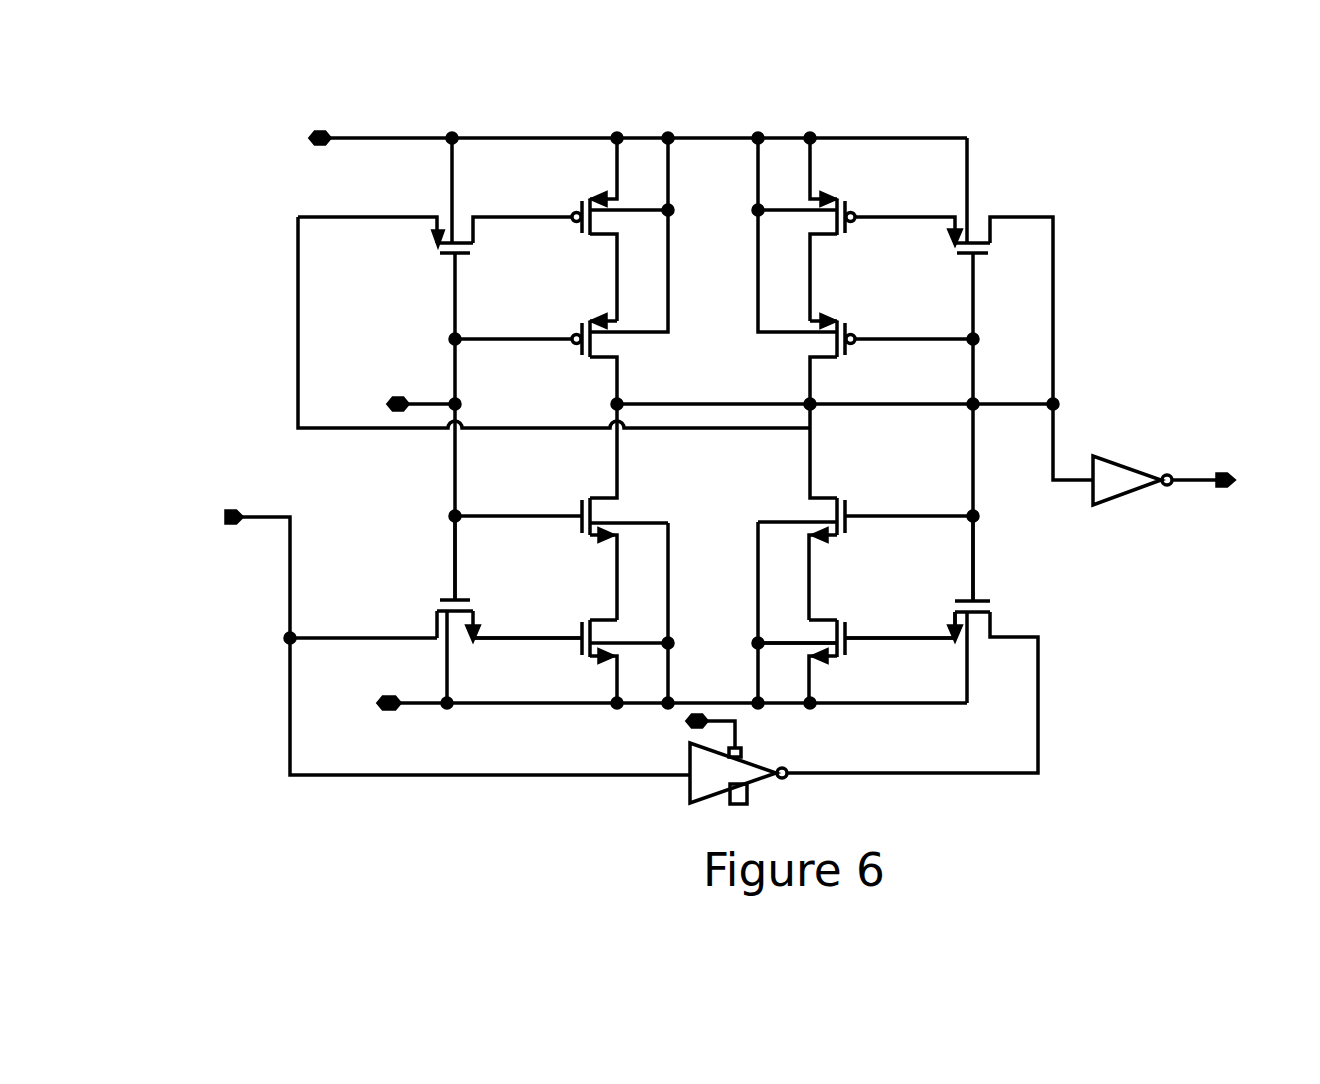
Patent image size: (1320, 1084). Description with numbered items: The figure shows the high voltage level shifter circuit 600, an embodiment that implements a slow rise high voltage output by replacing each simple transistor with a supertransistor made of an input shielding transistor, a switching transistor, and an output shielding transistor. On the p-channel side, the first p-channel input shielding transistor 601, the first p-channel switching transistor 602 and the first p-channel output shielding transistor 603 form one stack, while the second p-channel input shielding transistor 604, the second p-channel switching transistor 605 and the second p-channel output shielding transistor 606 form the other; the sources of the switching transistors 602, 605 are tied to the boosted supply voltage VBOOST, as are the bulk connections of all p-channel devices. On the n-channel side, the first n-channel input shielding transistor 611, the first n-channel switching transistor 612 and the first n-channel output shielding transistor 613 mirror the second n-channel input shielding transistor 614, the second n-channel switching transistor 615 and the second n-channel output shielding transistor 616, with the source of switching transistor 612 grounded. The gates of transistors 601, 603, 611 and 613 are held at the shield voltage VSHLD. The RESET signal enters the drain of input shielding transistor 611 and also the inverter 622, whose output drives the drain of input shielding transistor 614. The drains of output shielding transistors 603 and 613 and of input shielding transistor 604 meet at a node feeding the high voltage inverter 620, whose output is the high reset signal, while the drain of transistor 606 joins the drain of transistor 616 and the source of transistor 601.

The high voltage level shifter circuit 600 is at (710, 457).
The first p-channel CMOS input shielding transistor 601 is at (474, 253).
The first p-channel CMOS switching transistor 602 is at (598, 197).
The first p-channel CMOS output shielding transistor 603 is at (598, 320).
The second p-channel CMOS input shielding transistor 604 is at (954, 254).
The second p-channel CMOS switching transistor 605 is at (839, 197).
The second p-channel CMOS output shielding transistor 606 is at (839, 320).
The first n-channel CMOS input shielding transistor 611 is at (445, 600).
The first n-channel CMOS switching transistor 612 is at (598, 620).
The first n-channel CMOS output shielding transistor 613 is at (598, 497).
The second n-channel CMOS input shielding transistor 614 is at (987, 603).
The second n-channel CMOS switching transistor 615 is at (839, 620).
The second n-channel CMOS output shielding transistor 616 is at (839, 497).
The high voltage inverter 620 is at (1108, 461).
The inverter 622 is at (680, 795).